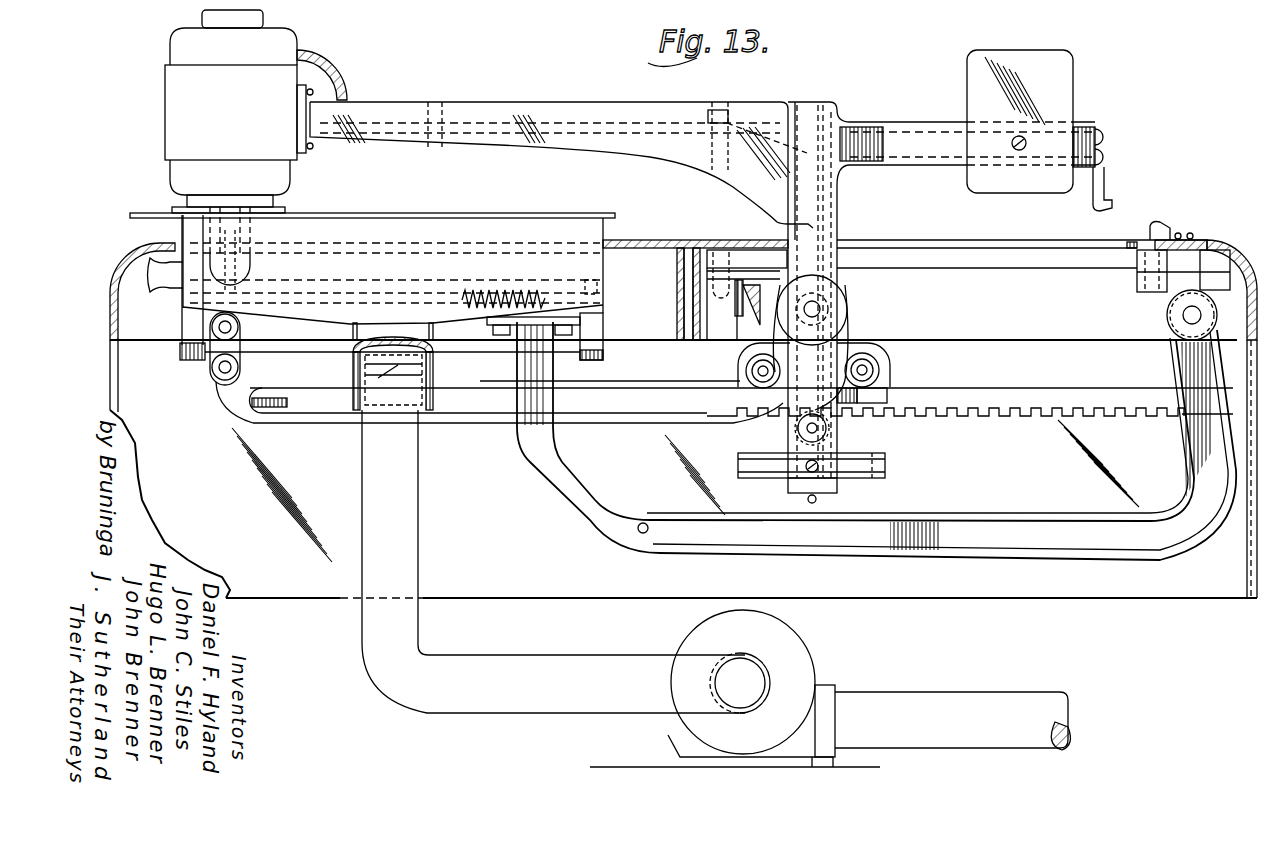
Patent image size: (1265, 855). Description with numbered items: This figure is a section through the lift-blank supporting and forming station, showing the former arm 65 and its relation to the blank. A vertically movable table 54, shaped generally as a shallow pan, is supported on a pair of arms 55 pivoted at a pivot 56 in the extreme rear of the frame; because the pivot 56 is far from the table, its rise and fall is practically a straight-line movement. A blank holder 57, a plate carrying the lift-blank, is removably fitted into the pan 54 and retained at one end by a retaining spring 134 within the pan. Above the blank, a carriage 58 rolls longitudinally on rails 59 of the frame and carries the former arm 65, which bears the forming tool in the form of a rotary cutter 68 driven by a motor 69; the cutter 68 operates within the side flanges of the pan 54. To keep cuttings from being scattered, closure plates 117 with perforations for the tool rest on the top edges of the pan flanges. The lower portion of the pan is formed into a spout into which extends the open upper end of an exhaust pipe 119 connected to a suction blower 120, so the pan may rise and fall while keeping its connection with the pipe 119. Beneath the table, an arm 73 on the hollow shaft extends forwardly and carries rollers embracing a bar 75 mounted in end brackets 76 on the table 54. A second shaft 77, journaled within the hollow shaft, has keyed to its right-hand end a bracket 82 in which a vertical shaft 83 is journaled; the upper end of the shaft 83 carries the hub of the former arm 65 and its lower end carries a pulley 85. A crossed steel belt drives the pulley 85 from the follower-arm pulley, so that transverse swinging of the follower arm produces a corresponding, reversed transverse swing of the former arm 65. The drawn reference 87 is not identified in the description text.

The vertically movable table 54 is at (262, 312).
The arms 55 is at (607, 498).
The pivot 56 is at (1183, 316).
The blank holder 57 is at (372, 282).
The carriage 58 is at (887, 358).
The rails 59 is at (975, 397).
The former arm 65 is at (505, 103).
The rotary cutter 68 is at (240, 265).
The motor 69 is at (178, 120).
The arm 73 is at (618, 420).
The bar 75 is at (278, 348).
The end brackets 76 is at (188, 320).
The second shaft 77 is at (203, 343).
The bracket 82 is at (833, 280).
The vertical shaft 83 is at (817, 113).
The pulley 85 is at (870, 480).
The horizontal conduit 87 is at (837, 182).
The closure plates 117 is at (378, 213).
The exhaust pipe 119 is at (412, 483).
The suction blower 120 is at (790, 655).
The retaining spring 134 is at (592, 283).